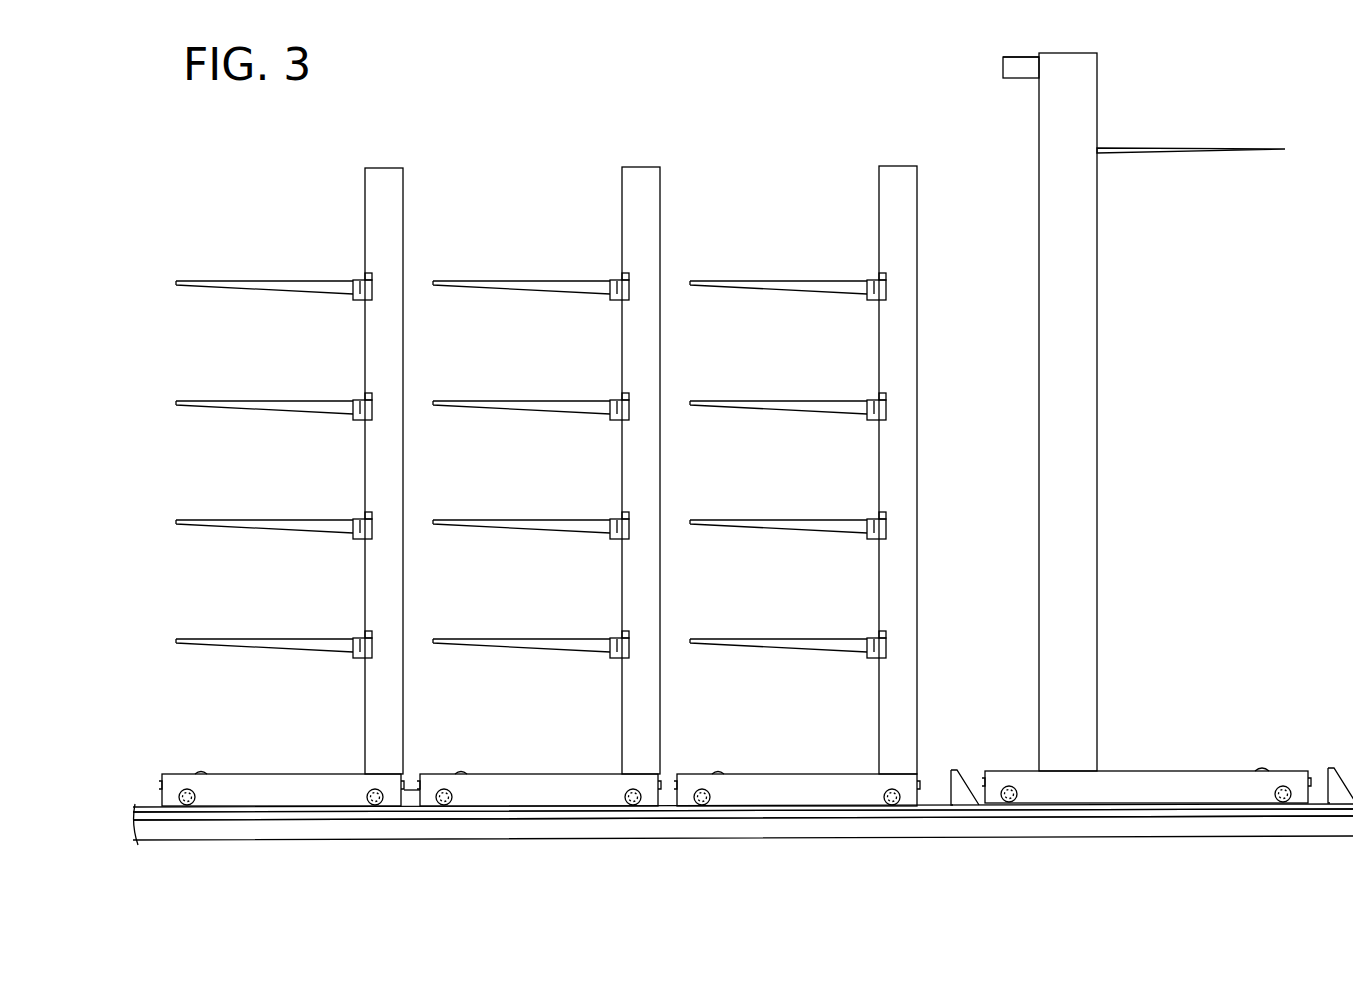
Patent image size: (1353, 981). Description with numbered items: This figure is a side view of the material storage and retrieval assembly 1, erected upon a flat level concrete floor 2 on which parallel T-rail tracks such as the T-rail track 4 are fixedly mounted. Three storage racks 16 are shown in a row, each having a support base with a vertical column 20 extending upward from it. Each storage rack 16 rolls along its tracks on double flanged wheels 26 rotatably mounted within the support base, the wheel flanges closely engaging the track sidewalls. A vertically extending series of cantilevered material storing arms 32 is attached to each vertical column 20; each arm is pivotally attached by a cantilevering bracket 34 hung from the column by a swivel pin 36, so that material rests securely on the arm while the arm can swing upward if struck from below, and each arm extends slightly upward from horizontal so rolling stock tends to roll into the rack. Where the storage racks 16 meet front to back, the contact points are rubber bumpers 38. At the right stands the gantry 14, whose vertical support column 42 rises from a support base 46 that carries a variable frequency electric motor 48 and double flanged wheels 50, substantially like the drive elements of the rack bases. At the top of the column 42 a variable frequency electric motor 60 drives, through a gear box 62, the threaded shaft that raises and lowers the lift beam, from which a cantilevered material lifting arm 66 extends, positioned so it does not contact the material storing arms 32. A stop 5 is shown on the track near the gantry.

The material storage and retrieval assembly 1 is at (643, 167).
The concrete floor 2 is at (663, 832).
The T-rail track 4 is at (795, 814).
The stop block 5 is at (957, 770).
The gantry 14 is at (1120, 447).
The storage rack 16 is at (322, 526).
The vertical column 20 is at (385, 212).
The double flanged wheel 26 is at (187, 806).
The cantilevered material storing arm 32 is at (235, 290).
The cantilevering bracket 34 is at (360, 296).
The swivel pin 36 is at (365, 274).
The rubber bumper 38 is at (412, 776).
The vertical support column 42 is at (1070, 447).
The support base 46 is at (1165, 786).
The variable frequency electric motor 48 is at (1262, 770).
The double flanged wheel 50 is at (1009, 803).
The variable frequency electric motor 60 is at (1015, 56).
The gear box 62 is at (1012, 65).
The cantilevered material lifting arm 66 is at (1205, 152).